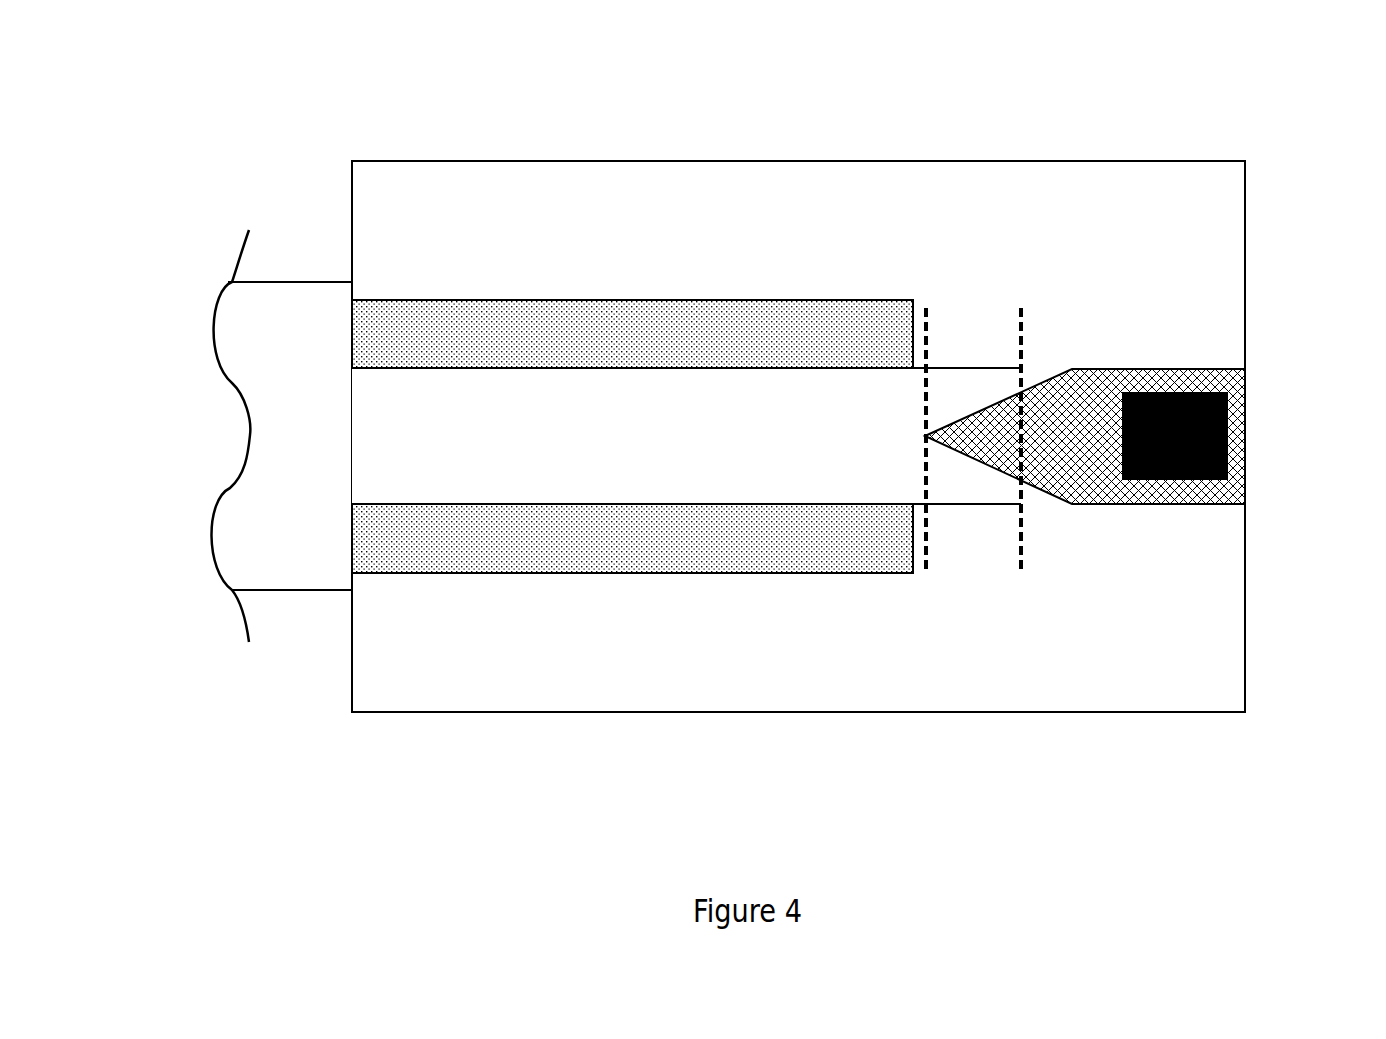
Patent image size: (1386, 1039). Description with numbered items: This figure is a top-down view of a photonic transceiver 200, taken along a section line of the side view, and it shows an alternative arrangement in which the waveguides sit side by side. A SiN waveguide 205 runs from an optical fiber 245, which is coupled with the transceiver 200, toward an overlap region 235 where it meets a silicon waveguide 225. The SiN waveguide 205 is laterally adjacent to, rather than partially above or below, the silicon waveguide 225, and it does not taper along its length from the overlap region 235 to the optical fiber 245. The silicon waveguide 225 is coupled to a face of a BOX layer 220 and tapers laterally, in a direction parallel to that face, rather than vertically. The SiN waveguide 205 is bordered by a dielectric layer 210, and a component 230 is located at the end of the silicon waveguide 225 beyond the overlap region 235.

The photonic transceiver 200 is at (332, 117).
The SiN waveguide 205 is at (721, 453).
The dielectric layer 210 is at (495, 530).
The BOX layer 220 is at (1089, 675).
The silicon waveguide 225 is at (1105, 485).
The component 230 is at (1228, 419).
The overlap region 235 is at (987, 280).
The optical fiber 245 is at (292, 295).